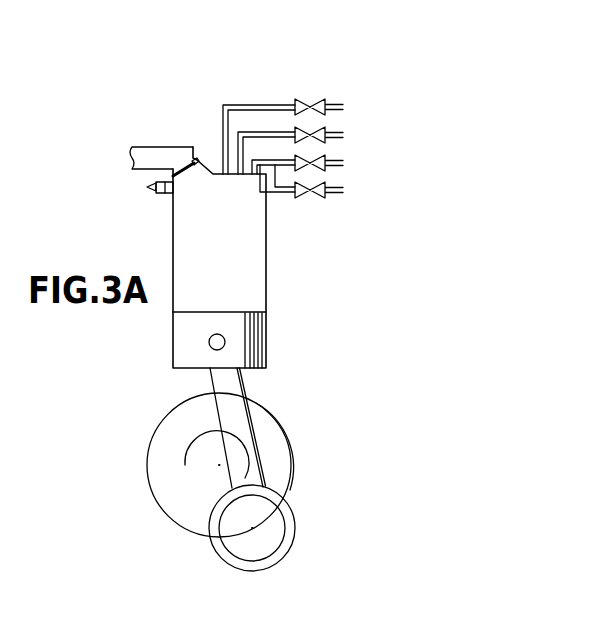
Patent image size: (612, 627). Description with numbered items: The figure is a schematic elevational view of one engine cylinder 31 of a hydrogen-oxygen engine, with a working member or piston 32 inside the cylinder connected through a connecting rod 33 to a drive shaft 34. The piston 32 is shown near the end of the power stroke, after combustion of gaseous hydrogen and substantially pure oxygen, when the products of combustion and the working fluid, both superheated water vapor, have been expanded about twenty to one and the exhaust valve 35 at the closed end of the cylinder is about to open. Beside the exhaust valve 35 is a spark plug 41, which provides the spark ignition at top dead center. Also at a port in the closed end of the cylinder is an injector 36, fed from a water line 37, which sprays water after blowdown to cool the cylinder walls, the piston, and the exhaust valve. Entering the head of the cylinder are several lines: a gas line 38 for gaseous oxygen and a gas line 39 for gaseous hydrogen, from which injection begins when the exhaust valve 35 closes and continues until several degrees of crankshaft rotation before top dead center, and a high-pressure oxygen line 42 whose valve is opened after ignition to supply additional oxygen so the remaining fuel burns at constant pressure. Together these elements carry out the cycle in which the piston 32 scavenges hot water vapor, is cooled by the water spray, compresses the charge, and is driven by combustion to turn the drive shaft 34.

The engine cylinder 31 is at (267, 277).
The piston 32 is at (258, 337).
The connecting rod 33 is at (228, 395).
The drive shaft 34 is at (200, 456).
The exhaust valve 35 is at (184, 165).
The injector 36 is at (225, 175).
The water line 37 is at (228, 105).
The gas line 38 is at (346, 160).
The gas line 39 is at (277, 132).
The spark plug 41 is at (147, 188).
The high-pressure oxygen line 42 is at (283, 193).